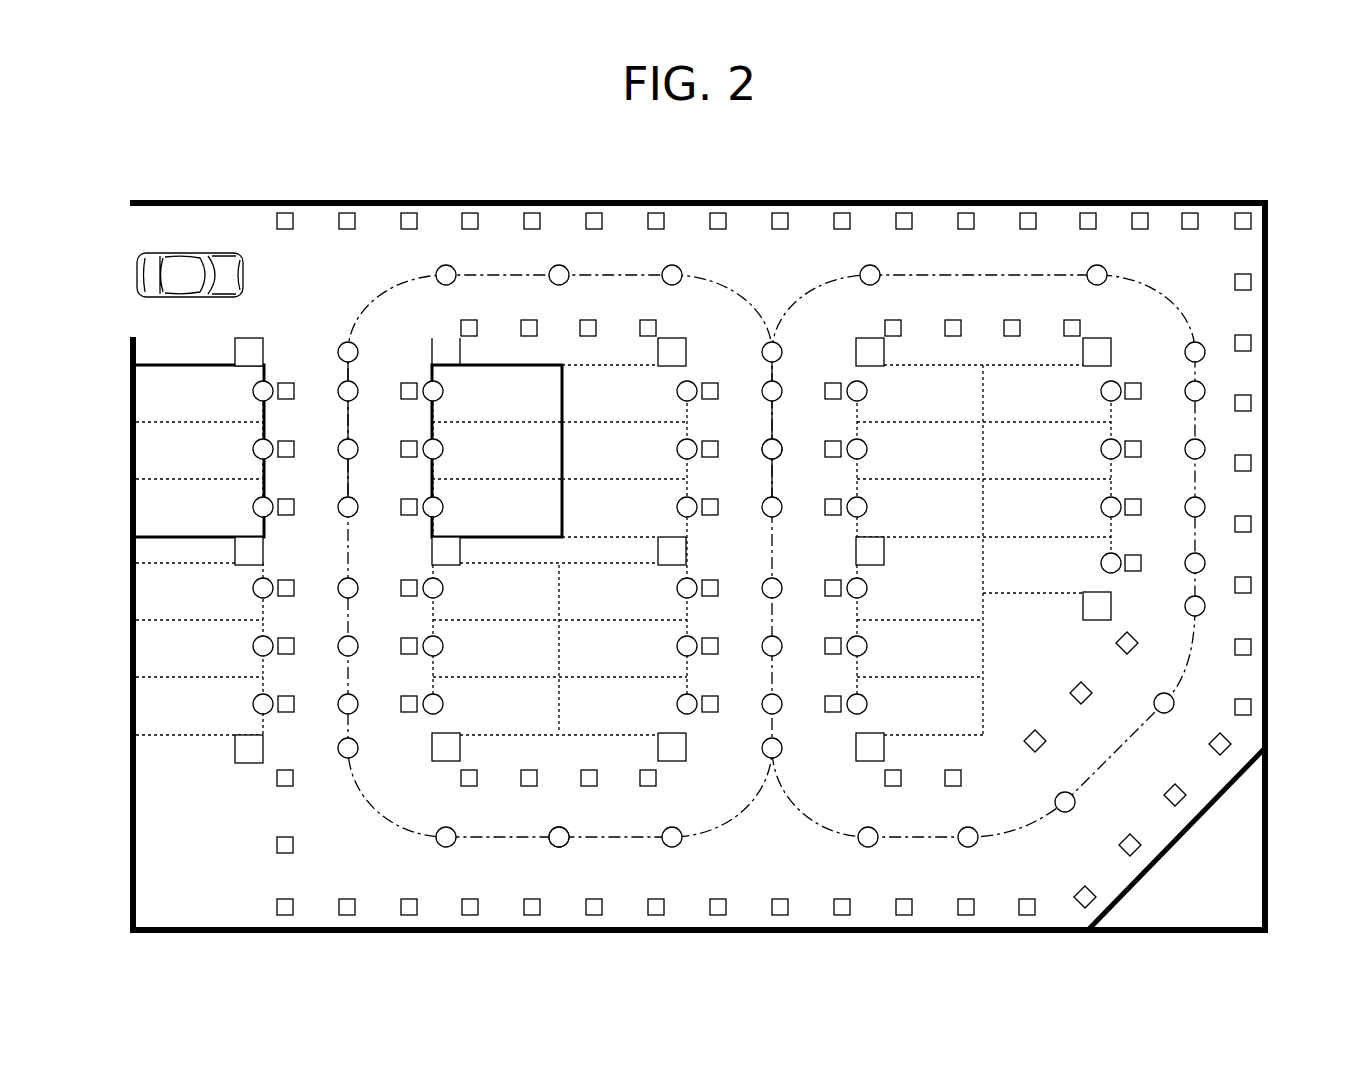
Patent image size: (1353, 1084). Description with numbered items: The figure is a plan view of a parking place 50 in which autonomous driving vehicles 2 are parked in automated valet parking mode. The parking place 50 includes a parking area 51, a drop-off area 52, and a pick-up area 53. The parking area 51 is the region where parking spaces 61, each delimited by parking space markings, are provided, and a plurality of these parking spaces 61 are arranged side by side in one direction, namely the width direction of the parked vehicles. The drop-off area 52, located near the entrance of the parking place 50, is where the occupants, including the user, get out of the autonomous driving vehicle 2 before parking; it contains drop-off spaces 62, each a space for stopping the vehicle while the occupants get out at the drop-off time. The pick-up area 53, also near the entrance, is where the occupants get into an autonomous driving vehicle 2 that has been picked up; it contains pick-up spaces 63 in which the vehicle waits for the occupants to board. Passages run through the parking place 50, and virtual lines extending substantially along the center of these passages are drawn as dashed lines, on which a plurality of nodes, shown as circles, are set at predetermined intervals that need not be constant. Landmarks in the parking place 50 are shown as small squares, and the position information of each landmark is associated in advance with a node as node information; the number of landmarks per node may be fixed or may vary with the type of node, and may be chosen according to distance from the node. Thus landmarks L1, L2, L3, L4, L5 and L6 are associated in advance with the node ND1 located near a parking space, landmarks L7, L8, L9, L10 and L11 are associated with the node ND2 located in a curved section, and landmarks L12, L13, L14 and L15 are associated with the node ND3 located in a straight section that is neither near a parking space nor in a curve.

The autonomous driving vehicle 2 is at (178, 272).
The parking place 50 is at (703, 516).
The parking area 51 is at (1113, 202).
The drop-off area 52 is at (158, 446).
The pick-up area 53 is at (488, 388).
The parking space 61 is at (628, 365).
The drop-off space 62 is at (150, 387).
The pick-up space 63 is at (545, 450).
The landmark L1 is at (711, 382).
The landmark L2 is at (833, 382).
The landmark L3 is at (712, 446).
The landmark L4 is at (831, 458).
The landmark L5 is at (712, 504).
The landmark L6 is at (831, 516).
The landmark L7 is at (1076, 688).
The landmark L8 is at (1129, 634).
The landmark L9 is at (1247, 698).
The landmark L10 is at (1229, 740).
The landmark L11 is at (1184, 791).
The landmark L12 is at (529, 786).
The landmark L13 is at (591, 786).
The landmark L14 is at (530, 898).
The landmark L15 is at (596, 898).
The node ND1 is at (783, 445).
The node ND2 is at (1155, 700).
The node ND3 is at (559, 848).